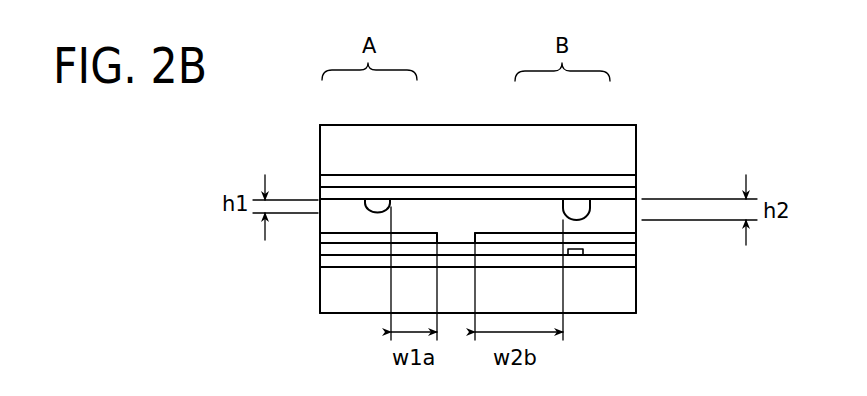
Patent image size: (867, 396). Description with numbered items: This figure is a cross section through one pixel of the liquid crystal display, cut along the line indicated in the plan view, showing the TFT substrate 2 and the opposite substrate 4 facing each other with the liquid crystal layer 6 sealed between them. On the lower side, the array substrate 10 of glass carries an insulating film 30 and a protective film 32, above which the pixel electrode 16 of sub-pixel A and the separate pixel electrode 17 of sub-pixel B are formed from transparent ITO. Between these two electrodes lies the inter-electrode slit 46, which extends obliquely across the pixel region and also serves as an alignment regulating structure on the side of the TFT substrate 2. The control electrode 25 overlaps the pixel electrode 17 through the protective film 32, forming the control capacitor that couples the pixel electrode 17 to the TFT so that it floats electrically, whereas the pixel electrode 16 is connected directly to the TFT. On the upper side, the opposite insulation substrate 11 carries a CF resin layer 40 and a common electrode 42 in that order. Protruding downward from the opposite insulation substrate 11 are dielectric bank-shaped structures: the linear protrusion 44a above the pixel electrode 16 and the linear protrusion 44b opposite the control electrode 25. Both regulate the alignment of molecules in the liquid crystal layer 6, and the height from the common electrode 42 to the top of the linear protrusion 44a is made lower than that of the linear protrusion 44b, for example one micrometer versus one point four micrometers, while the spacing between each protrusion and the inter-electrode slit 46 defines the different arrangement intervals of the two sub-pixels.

The TFT substrate 2 is at (666, 325).
The opposite substrate 4 is at (653, 107).
The liquid crystal layer 6 is at (637, 229).
The array substrate 10 is at (637, 297).
The opposite insulation substrate 11 is at (636, 148).
The pixel electrode 16 is at (340, 238).
The pixel electrode 17 is at (533, 237).
The control electrode 25 is at (578, 256).
The insulating film 30 is at (637, 262).
The protective film 32 is at (637, 247).
The CF resin layer 40 is at (637, 187).
The common electrode 42 is at (637, 199).
The linear protrusion 44a is at (377, 209).
The linear protrusion 44b is at (577, 217).
The inter-electrode slit 46 is at (454, 222).